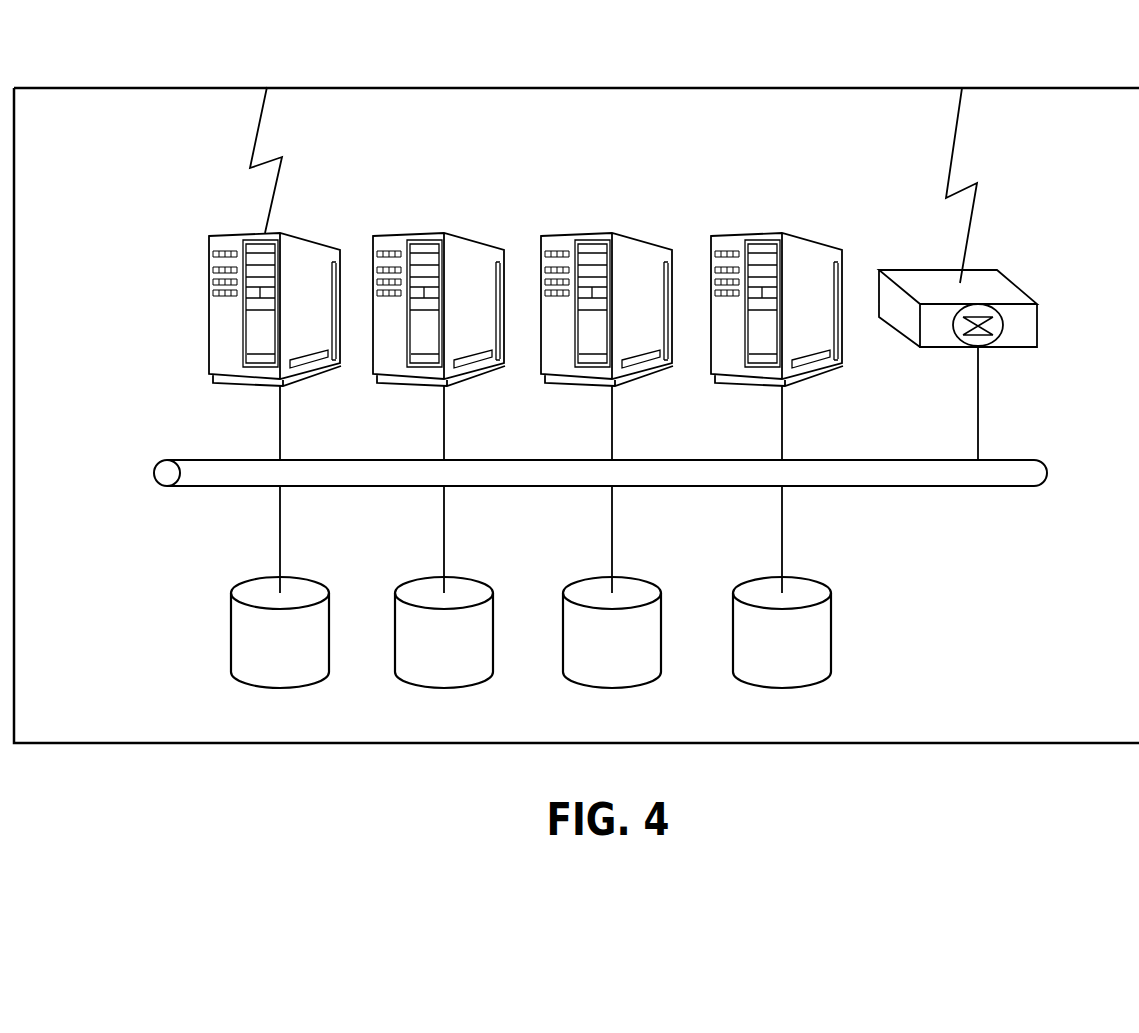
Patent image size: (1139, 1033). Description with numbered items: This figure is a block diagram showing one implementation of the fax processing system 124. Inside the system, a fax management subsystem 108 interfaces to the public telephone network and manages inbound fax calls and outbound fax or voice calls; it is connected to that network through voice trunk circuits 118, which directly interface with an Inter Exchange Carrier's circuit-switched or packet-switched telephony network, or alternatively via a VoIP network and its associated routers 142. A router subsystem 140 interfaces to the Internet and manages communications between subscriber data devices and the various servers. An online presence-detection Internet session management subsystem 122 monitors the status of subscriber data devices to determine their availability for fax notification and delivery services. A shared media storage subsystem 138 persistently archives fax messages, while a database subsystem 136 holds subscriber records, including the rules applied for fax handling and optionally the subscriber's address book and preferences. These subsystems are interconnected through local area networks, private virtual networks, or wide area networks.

The fax processing system 124 is at (498, 87).
The voice trunk circuits 118 is at (258, 122).
The routers 142 is at (960, 130).
The fax management subsystem 108 is at (208, 293).
The online presence-detection Internet session management subsystem 122 is at (827, 342).
The router subsystem 140 is at (1038, 320).
The shared media storage subsystem 138 is at (240, 625).
The database subsystem 136 is at (822, 642).